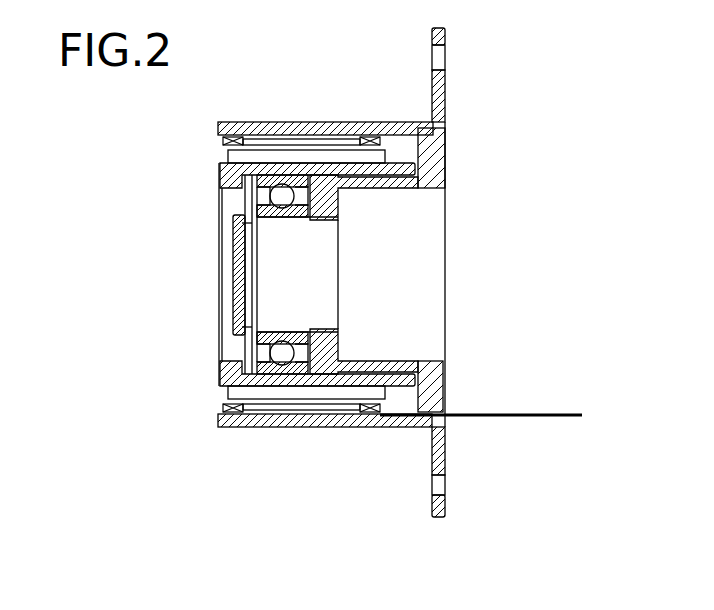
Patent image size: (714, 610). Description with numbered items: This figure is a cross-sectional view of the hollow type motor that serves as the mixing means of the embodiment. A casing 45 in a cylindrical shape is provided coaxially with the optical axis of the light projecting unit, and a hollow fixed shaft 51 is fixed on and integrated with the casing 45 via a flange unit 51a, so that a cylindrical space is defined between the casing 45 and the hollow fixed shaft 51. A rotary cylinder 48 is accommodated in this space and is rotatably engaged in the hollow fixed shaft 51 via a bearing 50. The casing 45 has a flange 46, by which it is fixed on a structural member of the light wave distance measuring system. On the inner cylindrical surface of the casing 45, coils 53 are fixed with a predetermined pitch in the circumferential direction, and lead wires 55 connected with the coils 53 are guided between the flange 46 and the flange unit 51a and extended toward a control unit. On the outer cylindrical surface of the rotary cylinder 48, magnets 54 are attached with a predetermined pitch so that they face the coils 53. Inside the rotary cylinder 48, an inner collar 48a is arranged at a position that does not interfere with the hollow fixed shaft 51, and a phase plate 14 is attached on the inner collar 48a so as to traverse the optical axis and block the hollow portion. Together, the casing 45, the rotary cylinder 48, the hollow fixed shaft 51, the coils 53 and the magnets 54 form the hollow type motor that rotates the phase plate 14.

The phase plate 14 is at (235, 275).
The casing 45 is at (317, 122).
The flange 46 is at (436, 518).
The rotary cylinder 48 is at (220, 370).
The inner collar 48a is at (243, 200).
The bearing 50 is at (280, 332).
The hollow fixed shaft 51 is at (417, 361).
The flange unit 51a is at (445, 378).
The coils 53 is at (362, 137).
The magnets 54 is at (228, 151).
The lead wires 55 is at (523, 417).